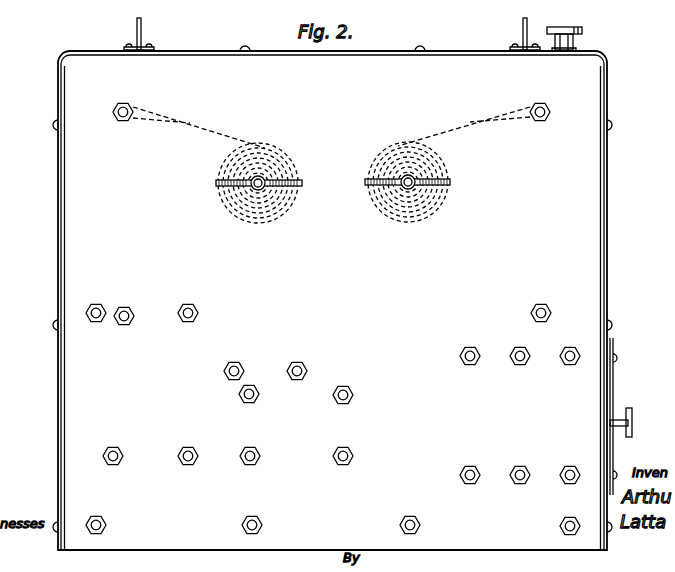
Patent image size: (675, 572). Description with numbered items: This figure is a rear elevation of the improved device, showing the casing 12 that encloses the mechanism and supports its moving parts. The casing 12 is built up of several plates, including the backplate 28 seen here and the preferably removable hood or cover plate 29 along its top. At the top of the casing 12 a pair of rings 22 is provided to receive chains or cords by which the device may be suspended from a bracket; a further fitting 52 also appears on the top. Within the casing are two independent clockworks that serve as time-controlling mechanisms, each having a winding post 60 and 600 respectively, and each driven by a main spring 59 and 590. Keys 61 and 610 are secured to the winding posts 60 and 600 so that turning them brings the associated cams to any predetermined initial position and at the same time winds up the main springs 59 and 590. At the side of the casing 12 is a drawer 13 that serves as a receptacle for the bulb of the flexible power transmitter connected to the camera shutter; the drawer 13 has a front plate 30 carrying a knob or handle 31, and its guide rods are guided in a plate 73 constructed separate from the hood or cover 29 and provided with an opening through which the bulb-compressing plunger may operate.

The casing 12 is at (608, 199).
The drawer 13 is at (624, 416).
The rings 22 is at (142, 38).
The backplate 28 is at (77, 212).
The hood or cover plate 29 is at (204, 53).
The front plate 30 is at (610, 464).
The knob or handle 31 is at (632, 427).
The filler cap 52 is at (583, 31).
The main spring 59 is at (268, 218).
The winding post 60 is at (274, 160).
The key 61 is at (290, 181).
The plate 73 is at (611, 379).
The main spring 590 is at (404, 224).
The winding post 600 is at (392, 203).
The key 610 is at (450, 183).